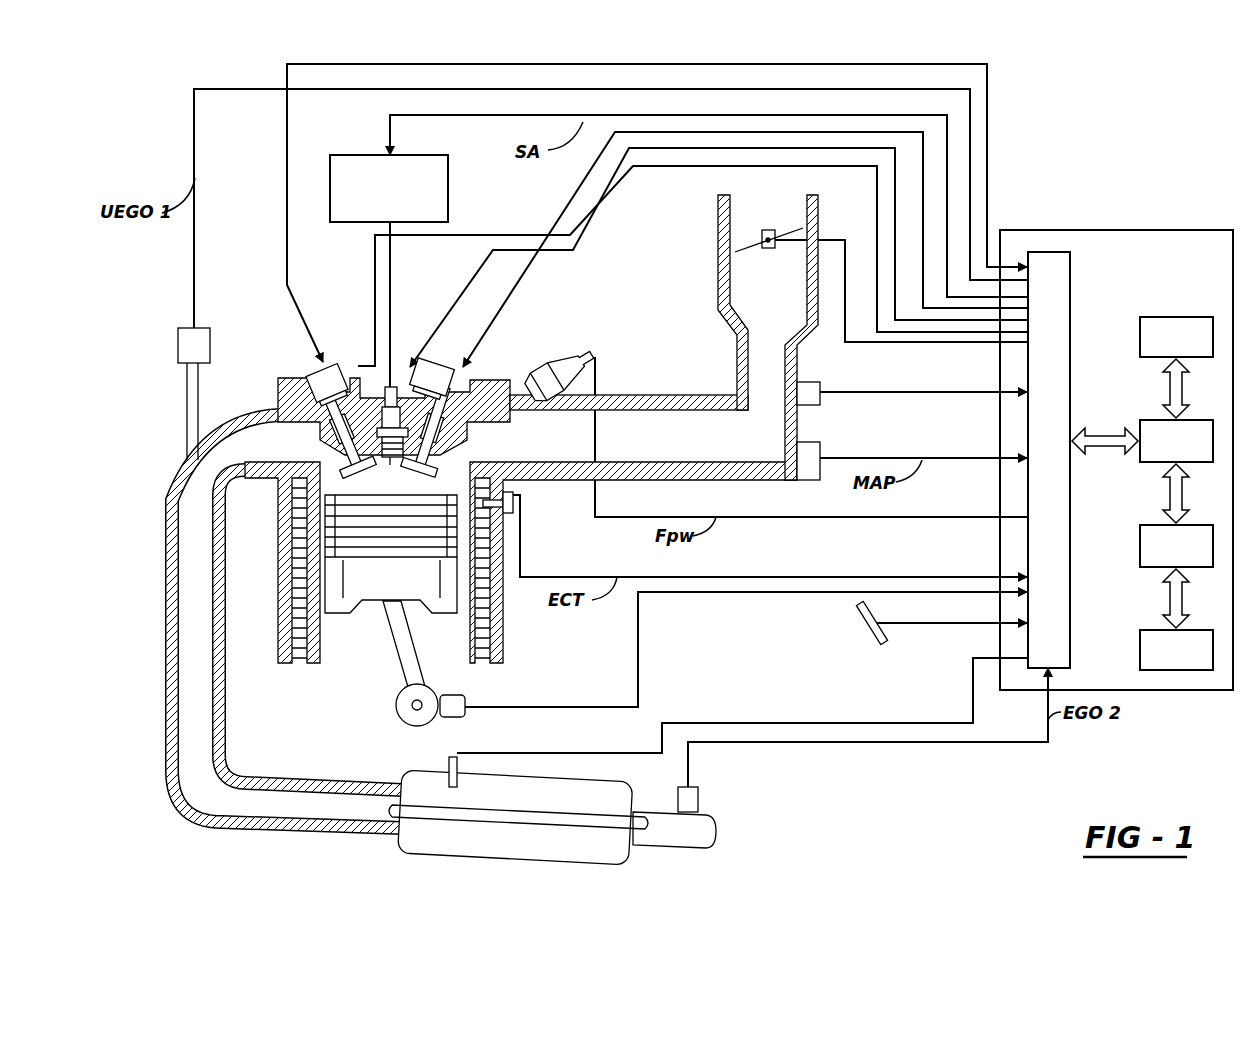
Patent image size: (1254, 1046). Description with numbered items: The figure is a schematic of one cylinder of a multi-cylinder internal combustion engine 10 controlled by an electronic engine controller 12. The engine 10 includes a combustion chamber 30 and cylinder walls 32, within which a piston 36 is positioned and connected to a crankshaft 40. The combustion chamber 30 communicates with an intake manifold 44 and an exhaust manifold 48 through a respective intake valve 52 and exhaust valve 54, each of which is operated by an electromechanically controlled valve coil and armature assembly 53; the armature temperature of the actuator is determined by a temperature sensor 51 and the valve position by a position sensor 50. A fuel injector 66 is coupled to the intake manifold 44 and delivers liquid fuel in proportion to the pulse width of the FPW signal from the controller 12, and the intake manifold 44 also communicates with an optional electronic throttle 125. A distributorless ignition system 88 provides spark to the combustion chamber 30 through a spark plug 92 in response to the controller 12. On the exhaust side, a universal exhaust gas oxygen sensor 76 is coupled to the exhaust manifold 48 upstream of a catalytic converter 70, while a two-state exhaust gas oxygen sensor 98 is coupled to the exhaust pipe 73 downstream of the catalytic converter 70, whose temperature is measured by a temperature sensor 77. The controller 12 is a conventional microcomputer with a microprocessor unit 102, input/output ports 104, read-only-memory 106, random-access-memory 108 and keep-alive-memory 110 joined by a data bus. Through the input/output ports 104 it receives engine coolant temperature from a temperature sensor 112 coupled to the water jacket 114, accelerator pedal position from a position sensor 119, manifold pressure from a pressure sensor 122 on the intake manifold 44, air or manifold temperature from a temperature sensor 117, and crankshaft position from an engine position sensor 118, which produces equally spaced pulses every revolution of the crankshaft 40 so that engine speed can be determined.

The internal combustion engine 10 is at (278, 377).
The electronic engine controller 12 is at (1116, 429).
The combustion chamber 30 is at (392, 480).
The cylinder walls 32 is at (322, 660).
The piston 36 is at (383, 583).
The crankshaft 40 is at (395, 705).
The intake manifold 44 is at (728, 452).
The exhaust manifold 48 is at (168, 480).
The position sensor 50 is at (357, 358).
The temperature sensor 51 is at (432, 350).
The intake valve 52 is at (455, 452).
The valve coil and armature assembly 53 is at (323, 356).
The exhaust valve 54 is at (342, 450).
The fuel injector 66 is at (542, 362).
The catalytic converter 70 is at (475, 860).
The exhaust pipe 73 is at (673, 850).
The Universal Exhaust Gas Oxygen (UEGO) sensor 76 is at (178, 340).
The temperature sensor 77 is at (437, 778).
The distributorless ignition system 88 is at (448, 192).
The spark plug 92 is at (395, 383).
The two-state exhaust gas oxygen sensor 98 is at (712, 788).
The microprocessor unit 102 is at (1146, 420).
The input/output ports 104 is at (1072, 278).
The read-only-memory 106 is at (1180, 317).
The random-access-memory 108 is at (1146, 525).
The keep-alive-memory 110 is at (1146, 630).
The temperature sensor 112 is at (512, 495).
The water jacket 114 is at (293, 667).
The temperature sensor 117 is at (825, 378).
The engine position sensor 118 is at (455, 722).
The position sensor 119 is at (858, 637).
The pressure sensor 122 is at (822, 446).
The electronic throttle 125 is at (758, 226).